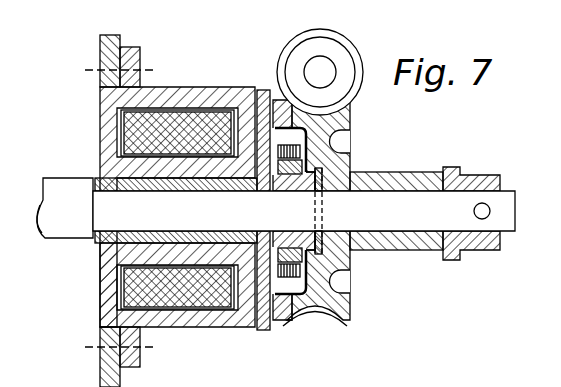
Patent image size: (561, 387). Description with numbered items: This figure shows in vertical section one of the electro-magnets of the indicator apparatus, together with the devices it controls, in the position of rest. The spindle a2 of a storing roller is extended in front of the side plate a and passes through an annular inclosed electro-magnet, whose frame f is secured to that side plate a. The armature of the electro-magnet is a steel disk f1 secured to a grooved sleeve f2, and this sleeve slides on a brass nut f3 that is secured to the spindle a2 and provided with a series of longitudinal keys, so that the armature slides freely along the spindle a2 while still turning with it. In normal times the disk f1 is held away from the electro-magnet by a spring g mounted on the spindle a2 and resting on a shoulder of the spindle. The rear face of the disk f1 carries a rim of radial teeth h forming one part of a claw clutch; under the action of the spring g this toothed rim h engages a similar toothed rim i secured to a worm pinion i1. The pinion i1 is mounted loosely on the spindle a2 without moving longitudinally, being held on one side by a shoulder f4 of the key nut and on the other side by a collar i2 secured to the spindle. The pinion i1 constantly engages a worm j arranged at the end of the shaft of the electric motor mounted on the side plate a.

The side plate a is at (100, 52).
The spindle a2 is at (66, 193).
The frame f is at (190, 88).
The steel disk f1 is at (257, 328).
The grooved sleeve f2 is at (312, 309).
The brass nut f3 is at (332, 145).
The shoulder f4 is at (357, 258).
The spring g is at (103, 256).
The radial teeth h is at (277, 103).
The toothed rim i is at (283, 321).
The worm pinion i1 is at (350, 130).
The collar i2 is at (477, 172).
The worm j is at (345, 80).